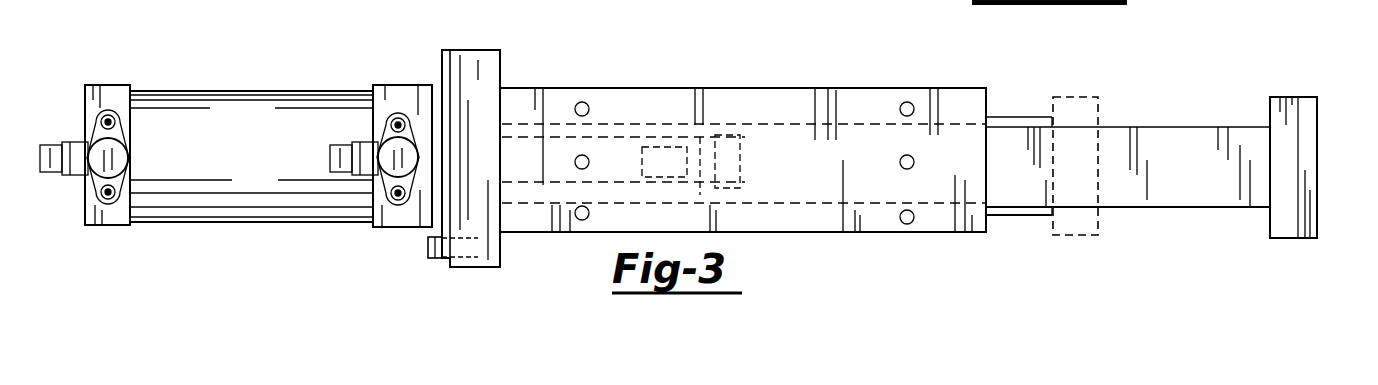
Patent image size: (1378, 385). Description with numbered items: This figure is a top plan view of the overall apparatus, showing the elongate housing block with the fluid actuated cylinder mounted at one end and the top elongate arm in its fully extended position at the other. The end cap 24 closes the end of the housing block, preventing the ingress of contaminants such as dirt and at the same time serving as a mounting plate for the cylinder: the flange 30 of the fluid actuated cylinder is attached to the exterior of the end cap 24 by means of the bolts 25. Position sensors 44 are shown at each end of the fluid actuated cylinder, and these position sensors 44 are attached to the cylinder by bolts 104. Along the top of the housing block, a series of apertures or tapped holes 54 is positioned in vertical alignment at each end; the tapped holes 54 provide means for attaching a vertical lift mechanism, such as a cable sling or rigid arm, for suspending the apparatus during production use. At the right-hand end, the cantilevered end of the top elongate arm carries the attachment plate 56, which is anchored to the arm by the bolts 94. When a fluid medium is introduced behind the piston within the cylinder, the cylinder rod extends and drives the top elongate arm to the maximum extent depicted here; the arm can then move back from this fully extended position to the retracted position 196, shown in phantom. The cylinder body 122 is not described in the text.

The end cap 24 is at (488, 50).
The bolts 25 is at (432, 258).
The flange 30 is at (450, 50).
The position sensors 44 is at (78, 145).
The apertures or tapped holes 54 is at (583, 102).
The attachment plate 56 is at (1297, 238).
The bolts 94 is at (1318, 115).
The bolts 104 is at (110, 198).
The cylinder body 122 is at (878, 233).
The retracted position 196 is at (1073, 96).